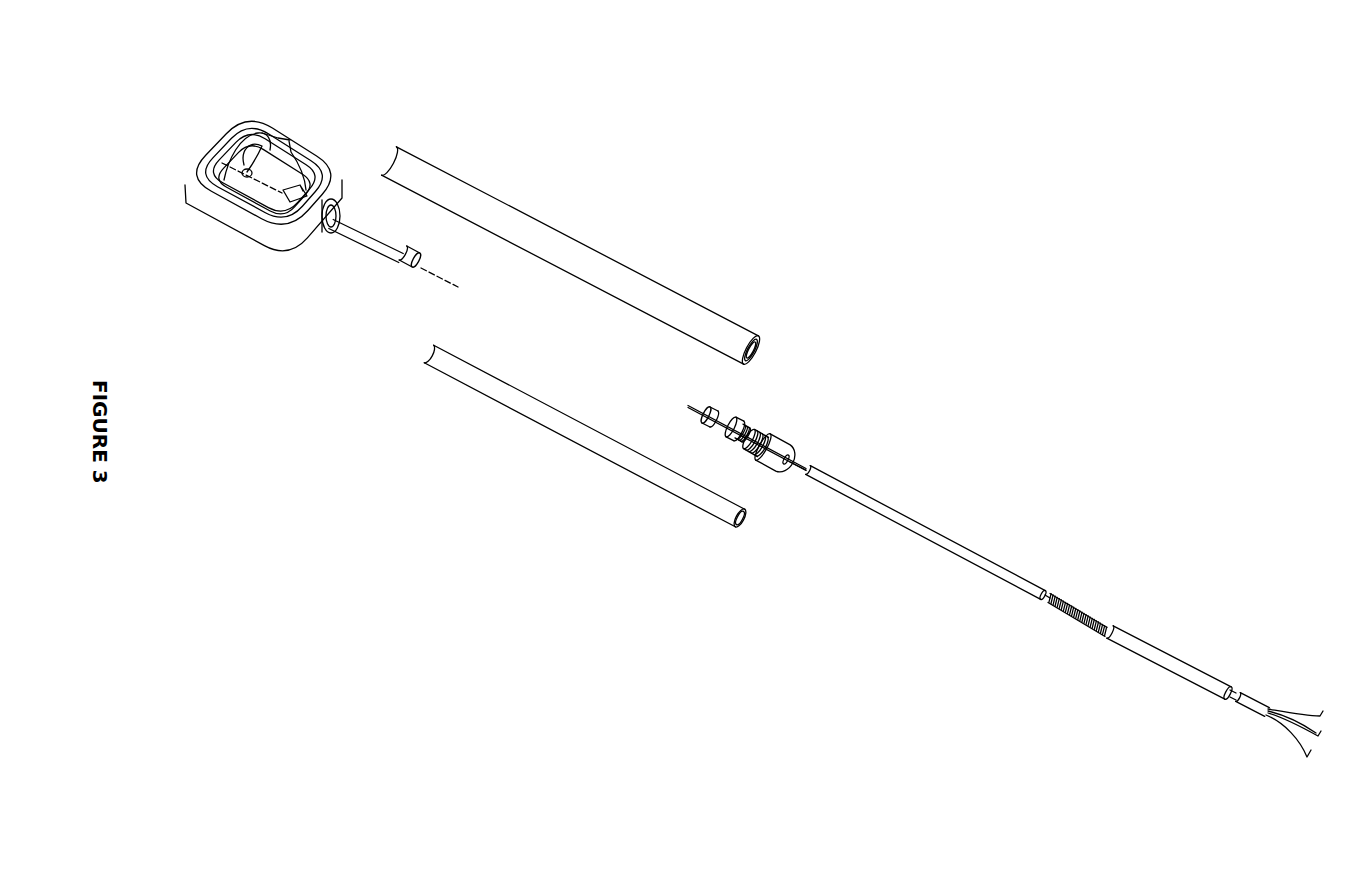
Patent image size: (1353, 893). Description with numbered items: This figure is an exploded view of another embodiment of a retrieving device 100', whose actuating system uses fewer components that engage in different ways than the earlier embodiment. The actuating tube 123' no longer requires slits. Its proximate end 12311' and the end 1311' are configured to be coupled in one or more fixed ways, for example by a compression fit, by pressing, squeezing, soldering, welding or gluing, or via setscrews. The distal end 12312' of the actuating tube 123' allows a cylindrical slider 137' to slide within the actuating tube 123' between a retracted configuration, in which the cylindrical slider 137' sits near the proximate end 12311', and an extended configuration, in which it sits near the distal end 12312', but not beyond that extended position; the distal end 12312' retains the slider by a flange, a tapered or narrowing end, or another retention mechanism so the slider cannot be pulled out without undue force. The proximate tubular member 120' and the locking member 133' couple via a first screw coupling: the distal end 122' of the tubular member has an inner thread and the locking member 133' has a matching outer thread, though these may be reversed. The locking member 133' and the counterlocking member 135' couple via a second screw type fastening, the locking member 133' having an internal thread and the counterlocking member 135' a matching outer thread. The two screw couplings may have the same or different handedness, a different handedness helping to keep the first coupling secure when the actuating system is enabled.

The retrieving device 100' is at (754, 404).
The proximate tubular member 120' is at (618, 219).
The distal end 122' is at (797, 320).
The actuating tube 123' is at (550, 476).
The proximate end 12311' is at (395, 402).
The distal end 12312' is at (699, 557).
The end 1311' is at (321, 220).
The locking member 133' is at (824, 427).
The counterlocking member 135' is at (814, 393).
The cylindrical slider 137' is at (793, 365).